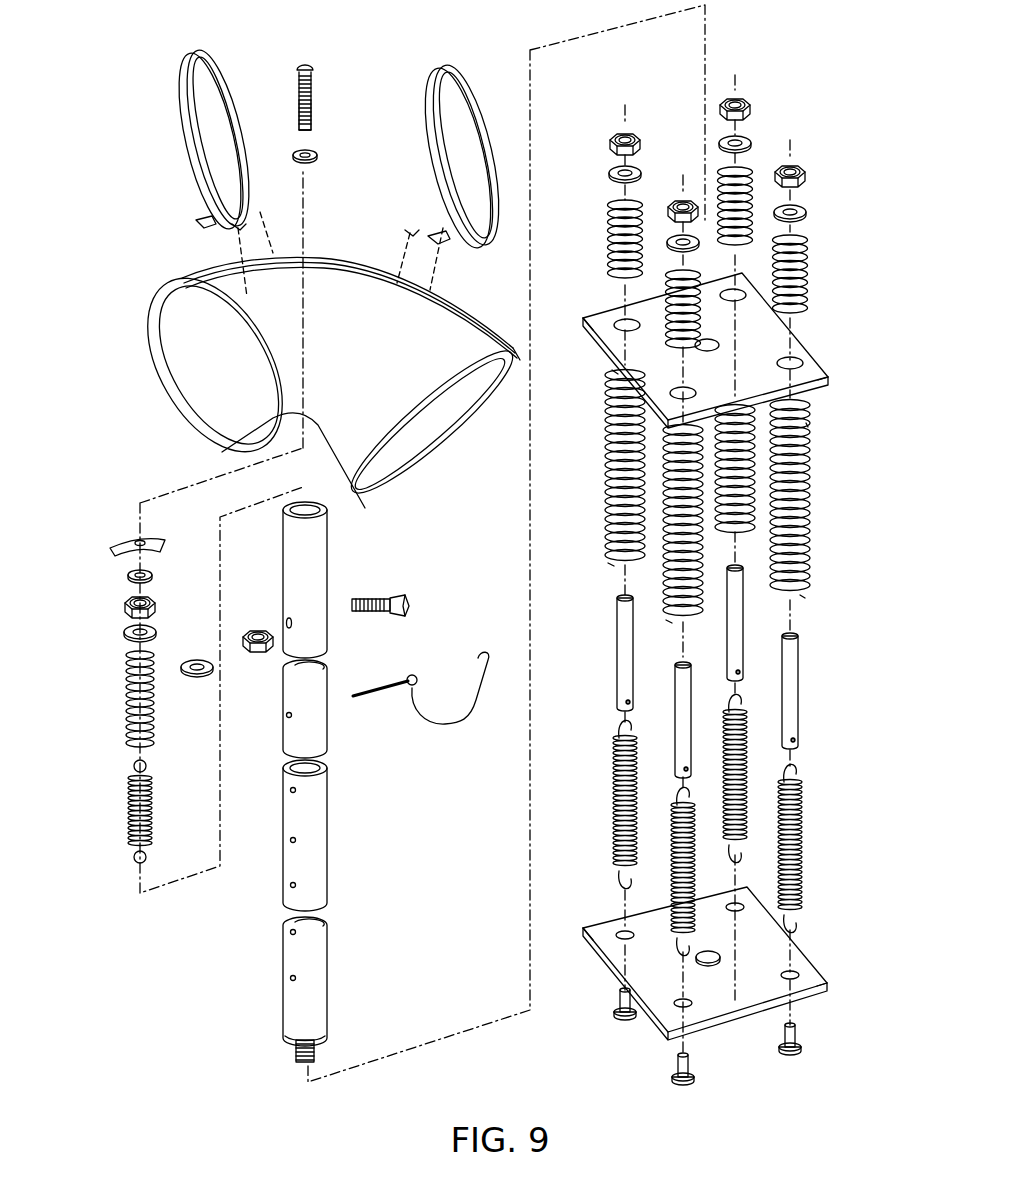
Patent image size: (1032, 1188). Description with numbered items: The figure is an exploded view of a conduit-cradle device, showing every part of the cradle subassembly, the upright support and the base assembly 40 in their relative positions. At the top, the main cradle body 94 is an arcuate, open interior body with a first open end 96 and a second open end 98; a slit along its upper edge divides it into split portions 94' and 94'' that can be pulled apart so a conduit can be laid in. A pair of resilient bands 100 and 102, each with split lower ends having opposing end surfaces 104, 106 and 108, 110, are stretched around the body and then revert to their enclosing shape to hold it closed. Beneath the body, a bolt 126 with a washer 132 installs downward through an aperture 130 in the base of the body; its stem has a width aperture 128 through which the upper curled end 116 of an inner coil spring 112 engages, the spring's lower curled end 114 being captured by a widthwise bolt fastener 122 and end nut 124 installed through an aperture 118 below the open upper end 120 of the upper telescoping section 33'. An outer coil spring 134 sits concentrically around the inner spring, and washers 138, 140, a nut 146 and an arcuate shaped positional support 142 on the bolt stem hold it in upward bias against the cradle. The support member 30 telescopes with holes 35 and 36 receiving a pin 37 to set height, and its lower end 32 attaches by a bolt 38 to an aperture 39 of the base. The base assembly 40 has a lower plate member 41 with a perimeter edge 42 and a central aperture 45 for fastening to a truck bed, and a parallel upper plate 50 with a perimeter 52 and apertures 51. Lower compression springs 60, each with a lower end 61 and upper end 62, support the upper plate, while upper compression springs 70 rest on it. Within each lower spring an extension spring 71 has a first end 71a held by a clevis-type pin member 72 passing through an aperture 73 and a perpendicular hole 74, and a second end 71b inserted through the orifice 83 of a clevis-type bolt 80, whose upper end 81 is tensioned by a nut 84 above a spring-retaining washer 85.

The support member 30 is at (312, 847).
The lower end 32 is at (290, 1040).
The upper telescoping section 33' is at (331, 707).
The holes 35 is at (287, 718).
The holes 36 is at (293, 840).
The pin 37 is at (413, 695).
The bolt 38 is at (300, 1060).
The aperture 39 is at (712, 345).
The base assembly 40 is at (832, 45).
The lower plate member 41 is at (730, 1025).
The perimeter edge 42 is at (588, 928).
The aperture 45 is at (715, 955).
The upper plate 50 is at (805, 385).
The apertures 51 is at (740, 295).
The perimeter 52 is at (585, 320).
The lower compression springs 60 is at (660, 535).
The lower end 61 is at (612, 560).
The upper end 62 is at (625, 432).
The upper compression springs 70 is at (645, 203).
The extension spring 71 is at (620, 828).
The first end 71a is at (618, 880).
The second end 71b is at (680, 790).
The clevis-type pin member 72 is at (620, 1012).
The aperture 73 is at (733, 900).
The perpendicular hole 74 is at (622, 1000).
The clevis-type bolts 80 is at (620, 667).
The upper end 81 is at (620, 600).
The orifice 83 is at (623, 703).
The nut 84 is at (640, 128).
The spring-retaining washer 85 is at (640, 170).
The main cradle body 94 is at (351, 382).
The split portion 94' is at (349, 277).
The split portion 94'' is at (351, 274).
The first open end 96 is at (185, 400).
The second open end 98 is at (398, 450).
The resilient band 100 is at (192, 60).
The resilient band 102 is at (487, 80).
The opposing end surface 104 is at (215, 225).
The opposing end surface 106 is at (238, 230).
The opposing end surface 108 is at (425, 285).
The opposing end surface 110 is at (440, 243).
The inner coil spring 112 is at (127, 798).
The lower curled end 114 is at (133, 860).
The upper curled end 116 is at (133, 764).
The aperture 118 is at (282, 622).
The open upper end 120 is at (320, 500).
The bolt fastener 122 is at (372, 598).
The end nut 124 is at (255, 648).
The bolt 126 is at (304, 68).
The width aperture 128 is at (312, 135).
The aperture 130 is at (297, 128).
The washer 132 is at (320, 157).
The outer coil spring 134 is at (122, 682).
The washer 138 is at (123, 634).
The washer 140 is at (125, 575).
The arcuate shaped positional support 142 is at (128, 544).
The nut 146 is at (124, 603).